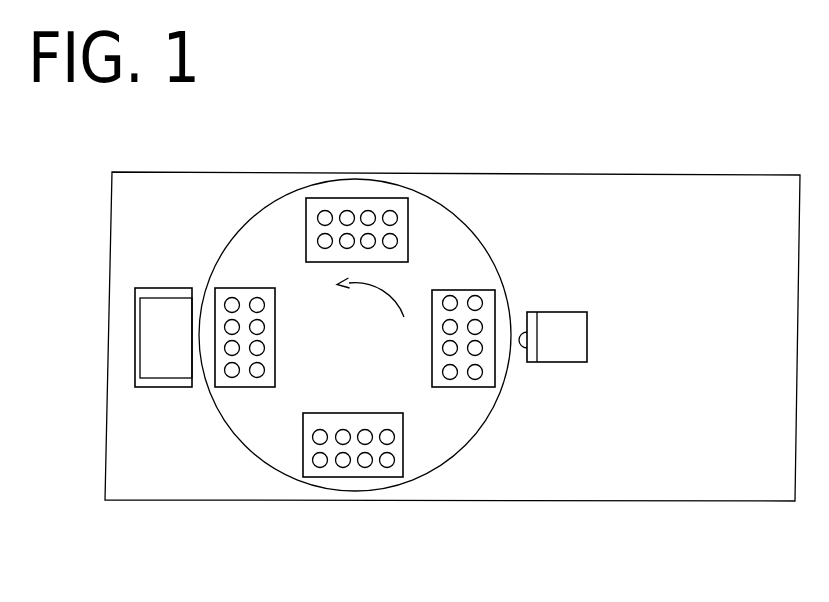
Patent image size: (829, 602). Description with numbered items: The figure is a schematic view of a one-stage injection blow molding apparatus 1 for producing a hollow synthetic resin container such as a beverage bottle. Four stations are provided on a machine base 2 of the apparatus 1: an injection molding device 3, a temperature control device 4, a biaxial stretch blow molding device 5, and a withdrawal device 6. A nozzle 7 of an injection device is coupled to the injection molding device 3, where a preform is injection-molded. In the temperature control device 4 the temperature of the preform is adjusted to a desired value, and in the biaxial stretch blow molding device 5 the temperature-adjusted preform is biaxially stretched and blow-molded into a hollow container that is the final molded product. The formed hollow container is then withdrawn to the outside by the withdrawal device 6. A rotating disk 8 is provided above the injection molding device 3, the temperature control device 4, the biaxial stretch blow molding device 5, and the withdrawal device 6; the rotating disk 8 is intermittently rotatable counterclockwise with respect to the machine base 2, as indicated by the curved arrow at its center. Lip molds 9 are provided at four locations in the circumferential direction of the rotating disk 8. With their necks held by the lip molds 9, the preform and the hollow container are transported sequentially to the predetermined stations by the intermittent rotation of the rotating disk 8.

The injection blow molding apparatus 1 is at (612, 150).
The machine base 2 is at (528, 468).
The injection molding device 3 is at (502, 296).
The temperature control device 4 is at (378, 198).
The biaxial stretch blow molding device 5 is at (203, 280).
The withdrawal device 6 is at (377, 477).
The nozzle 7 is at (551, 362).
The rotating disk 8 is at (462, 214).
The lip molds 9 is at (342, 217).